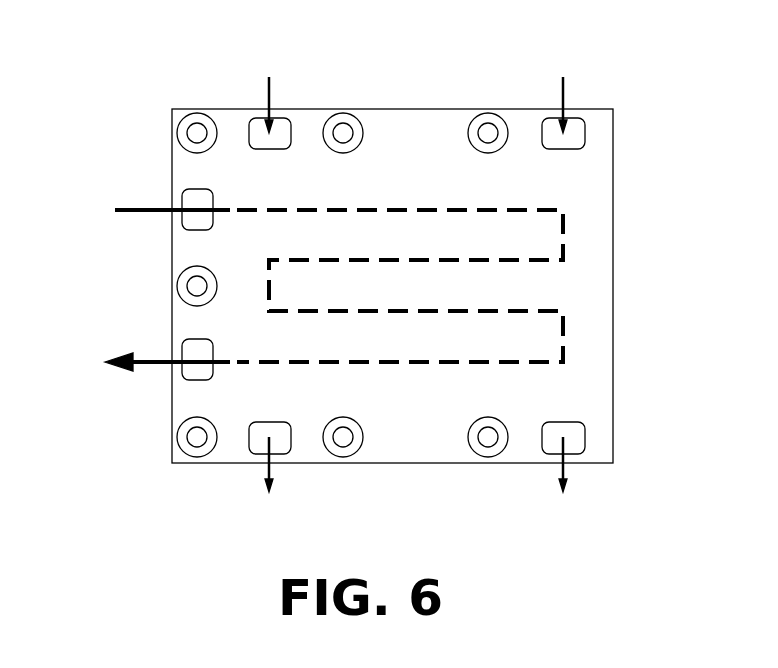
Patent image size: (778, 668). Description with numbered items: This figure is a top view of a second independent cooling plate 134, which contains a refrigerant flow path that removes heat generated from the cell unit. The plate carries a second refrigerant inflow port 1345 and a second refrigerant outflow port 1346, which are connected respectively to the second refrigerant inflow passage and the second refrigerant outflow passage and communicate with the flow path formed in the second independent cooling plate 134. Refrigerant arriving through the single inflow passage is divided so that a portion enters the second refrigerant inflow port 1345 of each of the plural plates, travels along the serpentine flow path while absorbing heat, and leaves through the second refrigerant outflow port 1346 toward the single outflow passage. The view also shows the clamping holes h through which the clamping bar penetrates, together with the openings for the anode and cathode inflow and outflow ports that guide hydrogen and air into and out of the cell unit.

The second independent cooling plate 134 is at (198, 99).
The second refrigerant inflow port 1345 is at (197, 194).
The second refrigerant outflow port 1346 is at (197, 346).
The clamping hole h is at (196, 441).